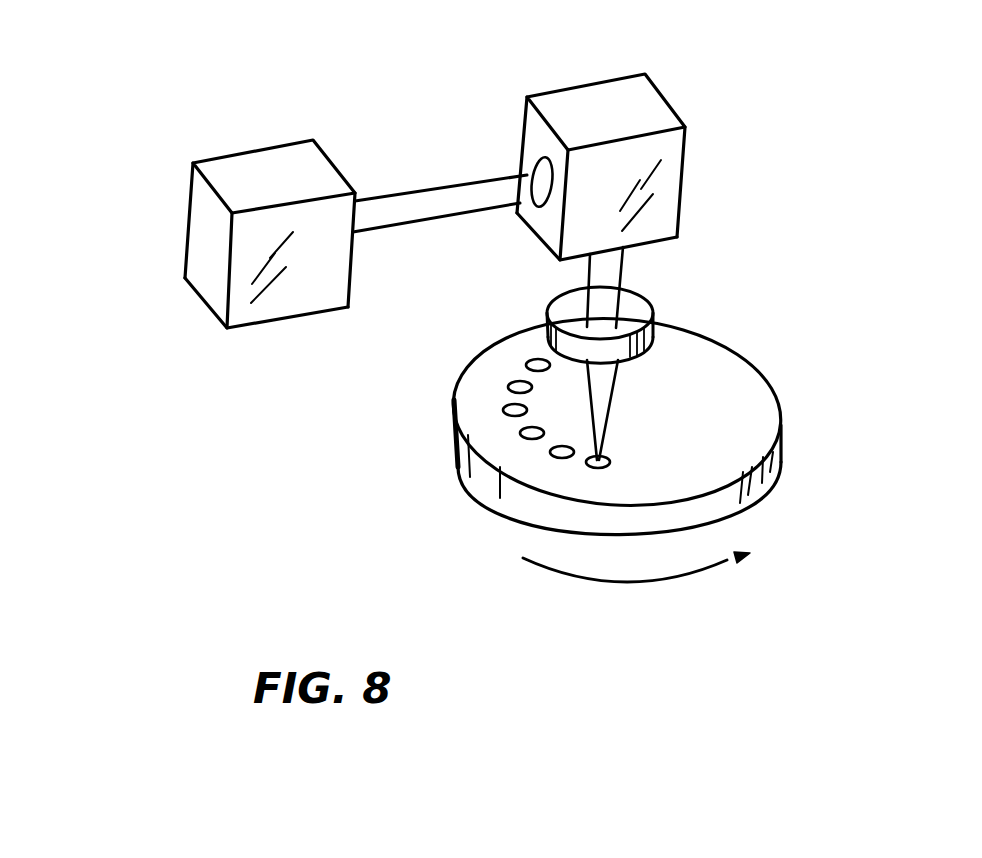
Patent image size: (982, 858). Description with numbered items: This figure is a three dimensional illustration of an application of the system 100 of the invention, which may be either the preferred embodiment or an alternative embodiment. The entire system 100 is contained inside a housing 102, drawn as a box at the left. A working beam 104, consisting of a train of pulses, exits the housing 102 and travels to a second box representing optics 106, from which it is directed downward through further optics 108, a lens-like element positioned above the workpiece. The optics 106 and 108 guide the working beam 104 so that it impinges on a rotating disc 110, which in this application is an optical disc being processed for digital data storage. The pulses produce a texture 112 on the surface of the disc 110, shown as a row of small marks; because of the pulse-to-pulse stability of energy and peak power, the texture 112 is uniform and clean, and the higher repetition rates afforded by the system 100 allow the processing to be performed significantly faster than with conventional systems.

The system 100 is at (137, 347).
The housing 102 is at (270, 168).
The working beam 104 is at (447, 190).
The optics 106 is at (610, 108).
The optics 108 is at (640, 312).
The rotating disc 110 is at (743, 407).
The texture 112 is at (520, 385).